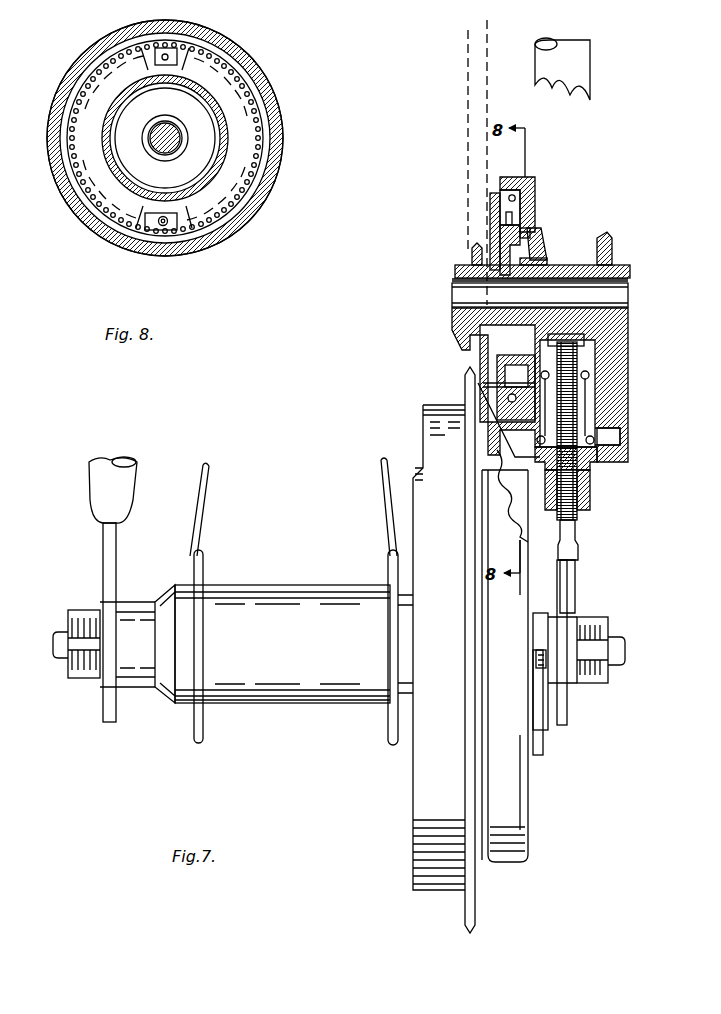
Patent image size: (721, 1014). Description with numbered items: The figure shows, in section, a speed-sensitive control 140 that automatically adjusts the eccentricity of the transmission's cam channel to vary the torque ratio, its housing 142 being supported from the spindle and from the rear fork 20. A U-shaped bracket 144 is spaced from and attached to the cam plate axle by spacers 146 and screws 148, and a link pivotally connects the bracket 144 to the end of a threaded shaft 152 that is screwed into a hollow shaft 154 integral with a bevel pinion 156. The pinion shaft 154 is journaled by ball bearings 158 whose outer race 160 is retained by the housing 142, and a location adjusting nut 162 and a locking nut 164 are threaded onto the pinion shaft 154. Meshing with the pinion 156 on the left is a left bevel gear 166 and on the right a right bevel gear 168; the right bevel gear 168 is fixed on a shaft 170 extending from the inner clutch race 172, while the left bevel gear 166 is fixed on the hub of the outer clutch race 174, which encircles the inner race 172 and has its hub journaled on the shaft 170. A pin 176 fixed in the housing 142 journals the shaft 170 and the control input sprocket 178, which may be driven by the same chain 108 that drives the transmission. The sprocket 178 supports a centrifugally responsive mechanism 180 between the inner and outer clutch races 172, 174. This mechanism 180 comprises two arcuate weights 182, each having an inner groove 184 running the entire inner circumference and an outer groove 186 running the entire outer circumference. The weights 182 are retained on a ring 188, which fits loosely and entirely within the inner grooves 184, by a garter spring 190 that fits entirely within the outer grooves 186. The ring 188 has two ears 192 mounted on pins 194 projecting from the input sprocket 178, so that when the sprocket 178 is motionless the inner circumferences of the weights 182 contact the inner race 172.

In FIG. 7, the rear fork 20 is at (588, 68).
In FIG. 7, the chain 108 is at (468, 78).
In FIG. 7, the control 140 is at (408, 190).
In FIG. 7, the housing 142 is at (455, 272).
In FIG. 7, the U-shaped bracket 144 is at (565, 722).
In FIG. 7, the spacers 146 is at (535, 664).
In FIG. 7, the screws 148 is at (536, 656).
In FIG. 7, the threaded shaft 152 is at (578, 518).
In FIG. 7, the hollow shaft 154 is at (578, 395).
In FIG. 7, the bevel pinion 156 is at (588, 350).
In FIG. 7, the ball bearings 158 is at (606, 440).
In FIG. 7, the outer race 160 is at (605, 435).
In FIG. 7, the location adjusting nut 162 is at (600, 464).
In FIG. 7, the locking nut 164 is at (590, 477).
In FIG. 7, the left bevel gear 166 is at (542, 238).
In FIG. 7, the right bevel gear 168 is at (610, 248).
In FIG. 8, the shaft 170 is at (180, 127).
In FIG. 7, the shaft 170 is at (593, 289).
In FIG. 8, the inner clutch race 172 is at (210, 176).
In FIG. 7, the inner clutch race 172 is at (500, 234).
In FIG. 8, the outer clutch race 174 is at (282, 157).
In FIG. 7, the outer clutch race 174 is at (498, 178).
In FIG. 8, the pin 176 is at (155, 143).
In FIG. 7, the pin 176 is at (540, 297).
In FIG. 7, the control input sprocket 178 is at (470, 255).
In FIG. 8, the centrifugally responsive mechanism 180 is at (300, 101).
In FIG. 7, the centrifugally responsive mechanism 180 is at (497, 192).
In FIG. 8, the arcuate weights 182 is at (232, 193).
In FIG. 7, the arcuate weights 182 is at (492, 204).
In FIG. 7, the inner groove 184 is at (530, 232).
In FIG. 7, the outer groove 186 is at (523, 178).
In FIG. 8, the ring 188 is at (147, 232).
In FIG. 7, the ring 188 is at (518, 220).
In FIG. 8, the garter spring 190 is at (240, 57).
In FIG. 8, the ears 192 is at (176, 50).
In FIG. 8, the pins 194 is at (165, 66).
In FIG. 7, the pins 194 is at (468, 386).